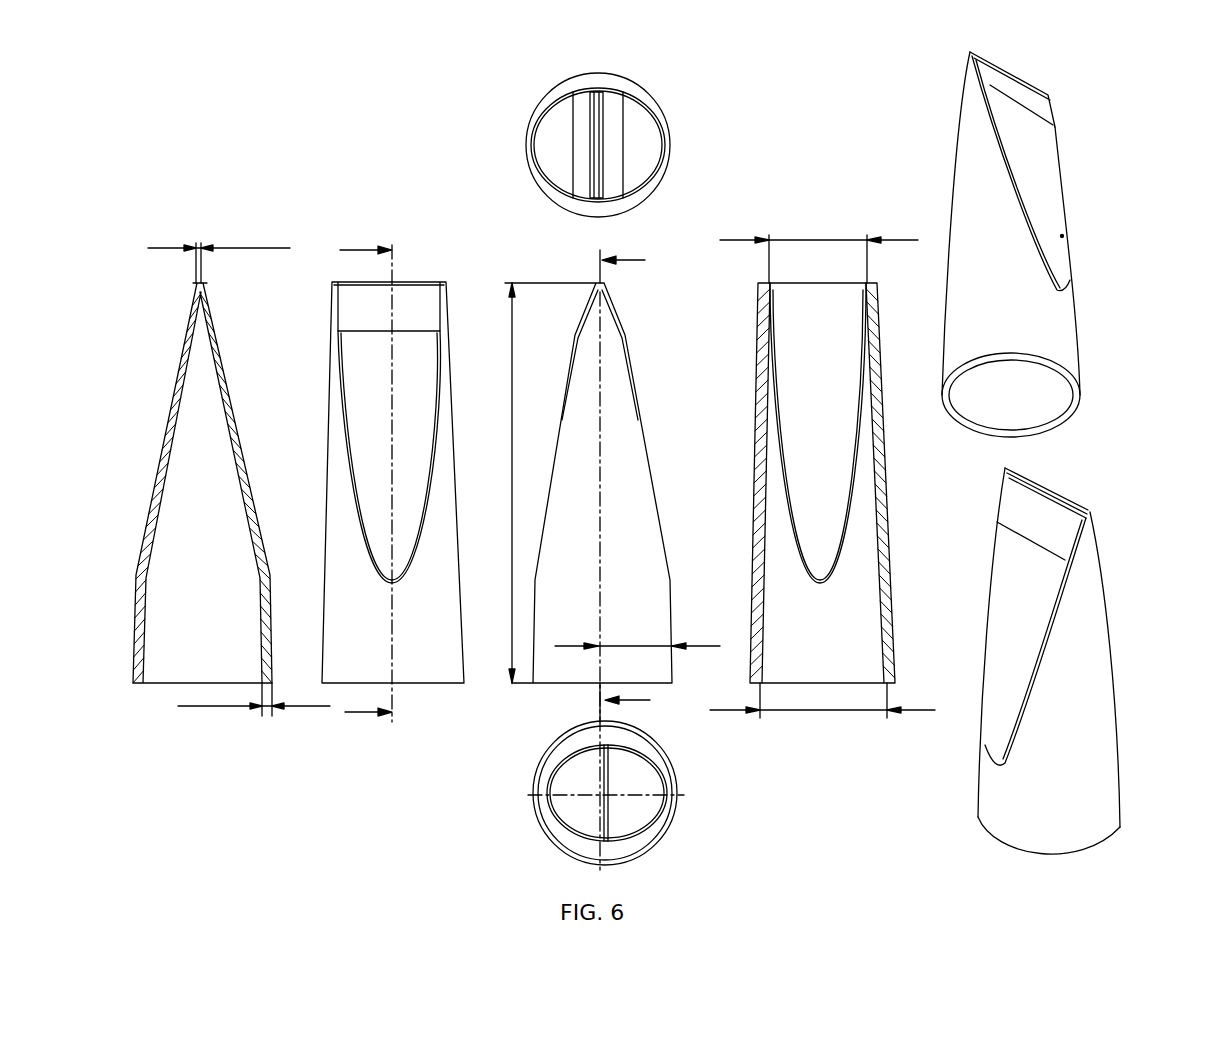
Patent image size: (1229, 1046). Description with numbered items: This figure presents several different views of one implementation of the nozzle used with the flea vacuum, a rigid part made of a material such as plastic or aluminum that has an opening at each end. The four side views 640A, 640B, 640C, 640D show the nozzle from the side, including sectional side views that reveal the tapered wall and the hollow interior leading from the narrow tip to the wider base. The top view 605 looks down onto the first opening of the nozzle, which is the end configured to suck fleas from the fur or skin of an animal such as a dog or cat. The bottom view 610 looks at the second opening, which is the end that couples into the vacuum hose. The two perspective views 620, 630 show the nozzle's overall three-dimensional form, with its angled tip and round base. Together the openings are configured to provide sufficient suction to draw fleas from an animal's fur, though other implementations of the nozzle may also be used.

The top view 605 is at (668, 157).
The bottom view 610 is at (670, 808).
The perspective view 620 is at (1068, 292).
The perspective view 630 is at (1105, 612).
The side view 640A is at (191, 233).
The side view 640B is at (408, 277).
The side view 640C is at (628, 368).
The side view 640D is at (740, 485).